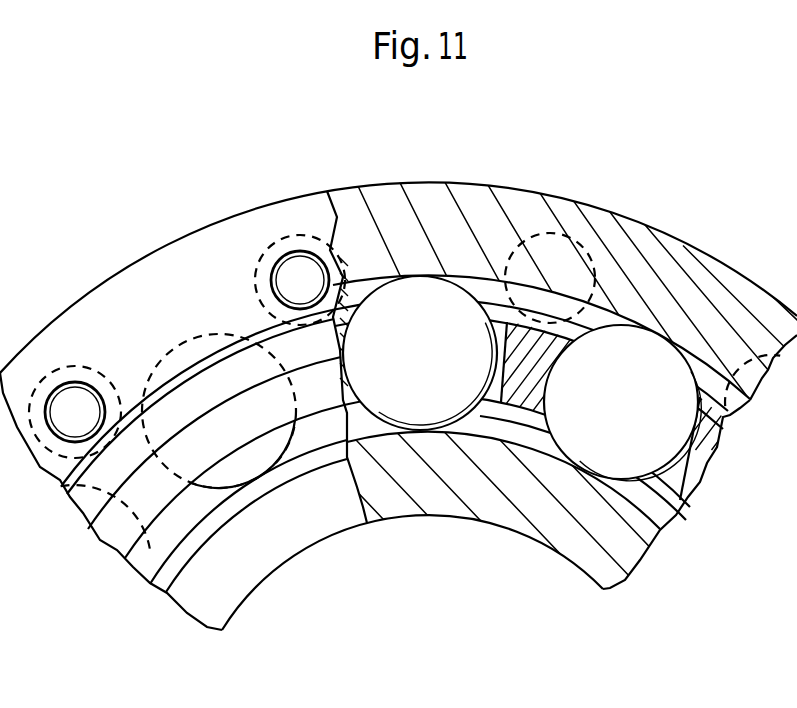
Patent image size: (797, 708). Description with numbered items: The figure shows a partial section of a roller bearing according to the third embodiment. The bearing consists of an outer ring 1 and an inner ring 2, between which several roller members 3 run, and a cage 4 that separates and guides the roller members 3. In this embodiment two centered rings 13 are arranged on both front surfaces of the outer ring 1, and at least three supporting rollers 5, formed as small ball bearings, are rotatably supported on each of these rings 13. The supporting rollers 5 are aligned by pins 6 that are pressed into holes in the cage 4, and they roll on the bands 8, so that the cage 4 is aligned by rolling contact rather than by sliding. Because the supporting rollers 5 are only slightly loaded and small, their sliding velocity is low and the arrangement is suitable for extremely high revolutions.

The outer ring 1 is at (668, 303).
The inner ring 2 is at (427, 490).
The roller members 3 is at (432, 345).
The cage 4 is at (541, 325).
The supporting rollers 5 is at (255, 262).
The pins 6 is at (297, 268).
The bands 8 is at (173, 387).
The centered rings 13 is at (170, 297).